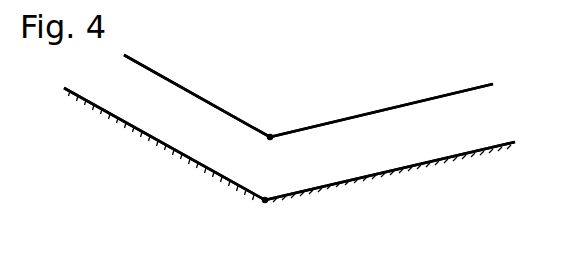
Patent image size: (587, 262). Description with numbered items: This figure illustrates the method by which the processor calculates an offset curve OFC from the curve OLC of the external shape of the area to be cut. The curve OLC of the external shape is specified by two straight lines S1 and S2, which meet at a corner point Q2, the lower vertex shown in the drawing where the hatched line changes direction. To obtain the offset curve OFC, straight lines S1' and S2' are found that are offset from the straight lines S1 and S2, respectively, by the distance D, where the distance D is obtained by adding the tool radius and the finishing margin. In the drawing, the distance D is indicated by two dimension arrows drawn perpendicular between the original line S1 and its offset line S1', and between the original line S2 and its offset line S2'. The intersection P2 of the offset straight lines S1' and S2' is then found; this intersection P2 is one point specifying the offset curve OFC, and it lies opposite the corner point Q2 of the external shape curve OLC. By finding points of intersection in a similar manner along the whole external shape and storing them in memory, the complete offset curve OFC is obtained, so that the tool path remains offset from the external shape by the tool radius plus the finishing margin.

The offset curve OFC is at (248, 116).
The curve of the external shape OLC is at (214, 190).
The offset straight line S1' is at (197, 88).
The offset straight line S2' is at (381, 88).
The straight line S1 is at (164, 150).
The straight line S2 is at (390, 178).
The intersection P2 is at (277, 147).
The vertex point of lower line Q2 is at (274, 211).
The distance D is at (152, 71).